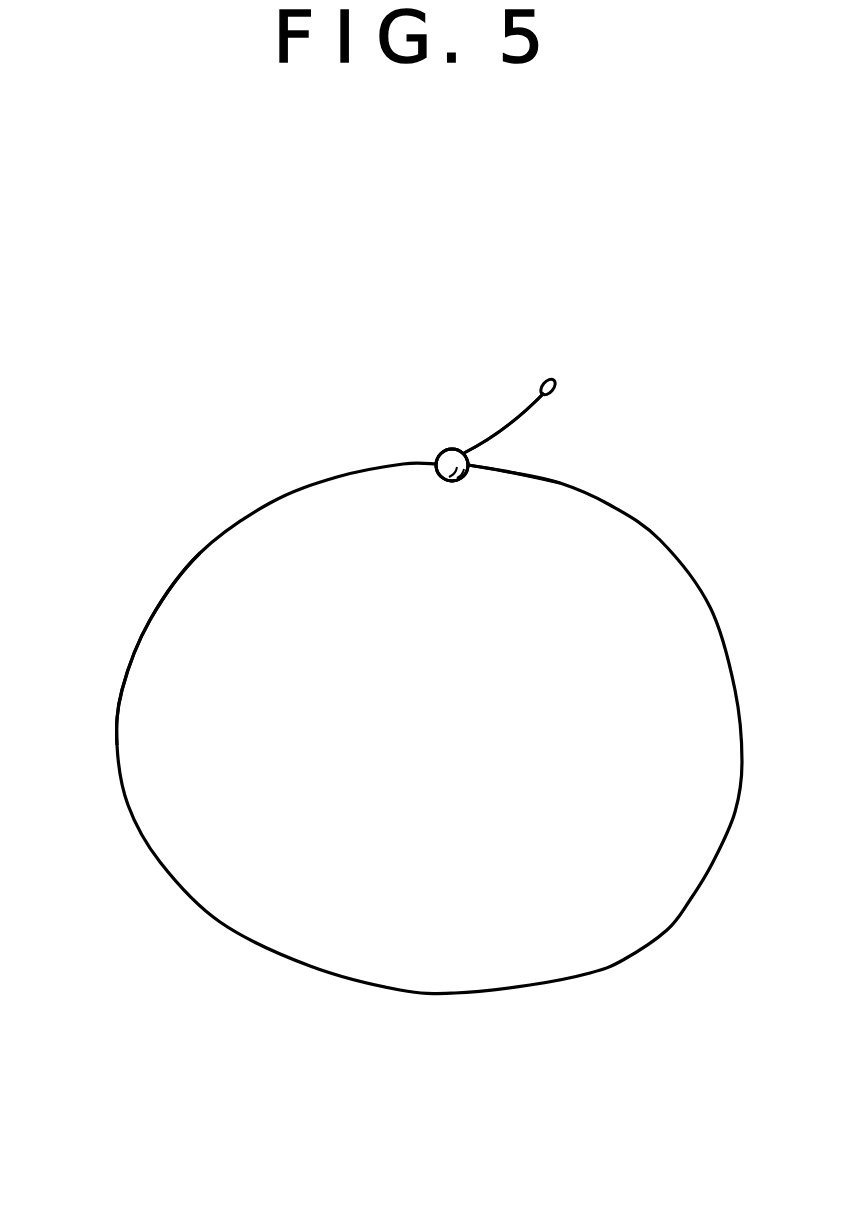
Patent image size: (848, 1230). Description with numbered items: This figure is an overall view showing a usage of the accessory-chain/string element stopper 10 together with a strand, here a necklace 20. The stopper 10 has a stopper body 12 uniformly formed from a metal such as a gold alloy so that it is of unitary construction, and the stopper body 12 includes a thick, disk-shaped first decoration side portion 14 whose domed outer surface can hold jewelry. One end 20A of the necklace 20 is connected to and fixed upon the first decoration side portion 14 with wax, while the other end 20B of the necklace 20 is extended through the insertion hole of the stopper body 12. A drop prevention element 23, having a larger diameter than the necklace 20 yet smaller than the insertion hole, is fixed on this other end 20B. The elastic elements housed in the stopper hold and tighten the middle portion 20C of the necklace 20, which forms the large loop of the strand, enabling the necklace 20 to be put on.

The accessory-chain/string element stopper 10 is at (443, 417).
The stopper body 12 is at (433, 452).
The first decoration side portion 14 is at (442, 481).
The necklace 20 is at (588, 978).
The end of the necklace 20A is at (468, 469).
The other end of the necklace 20B is at (512, 418).
The middle portion of the necklace 20C is at (139, 640).
The drop prevention element 23 is at (553, 389).